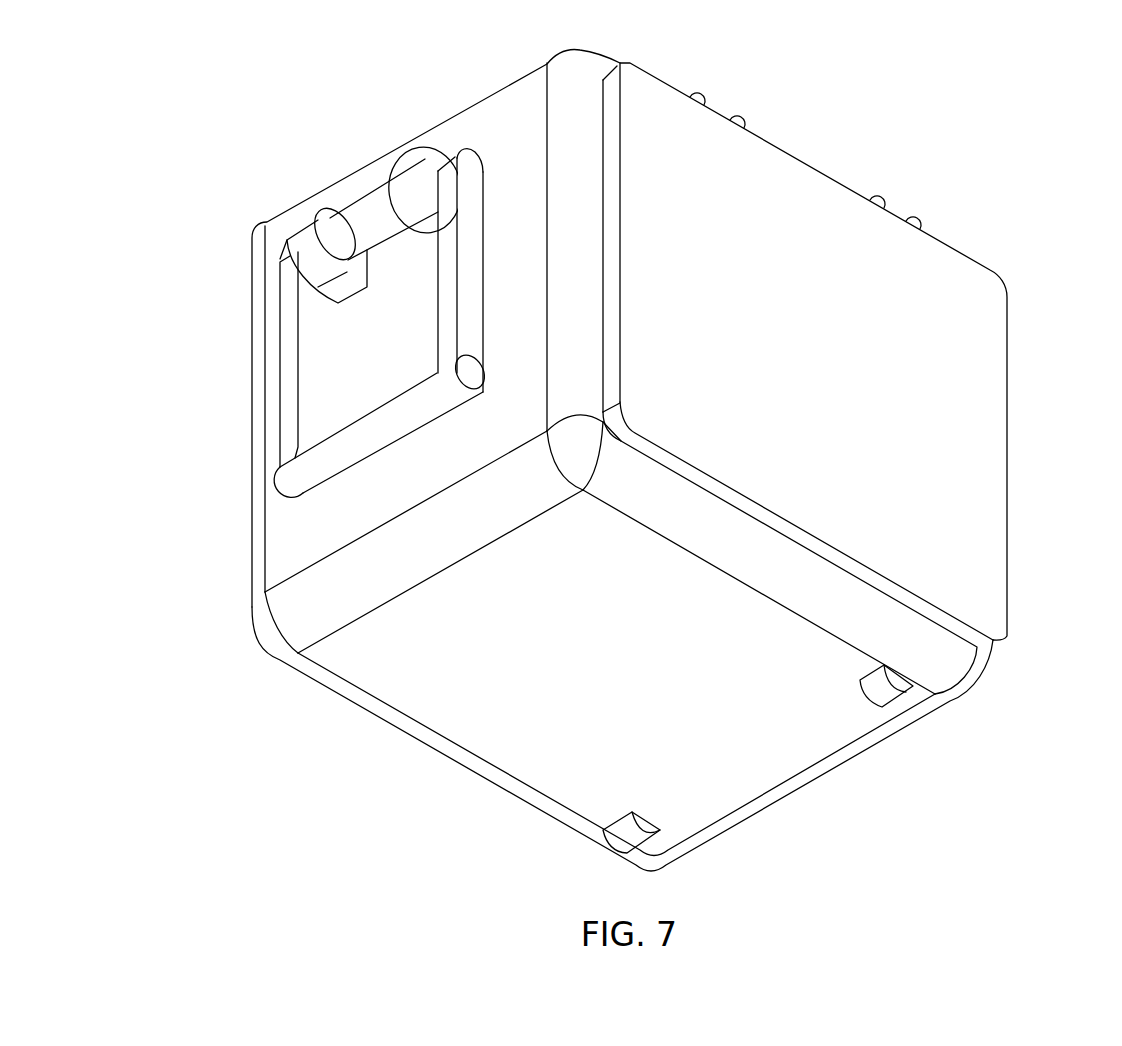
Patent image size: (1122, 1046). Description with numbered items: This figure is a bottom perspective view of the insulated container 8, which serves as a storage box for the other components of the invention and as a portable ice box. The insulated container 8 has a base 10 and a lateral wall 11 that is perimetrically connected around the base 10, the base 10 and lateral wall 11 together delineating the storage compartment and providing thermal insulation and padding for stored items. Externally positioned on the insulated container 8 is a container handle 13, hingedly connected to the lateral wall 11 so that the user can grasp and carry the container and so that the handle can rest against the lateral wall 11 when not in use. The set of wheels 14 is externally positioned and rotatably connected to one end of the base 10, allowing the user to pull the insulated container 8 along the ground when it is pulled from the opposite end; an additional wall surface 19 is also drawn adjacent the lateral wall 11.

The insulated container 8 is at (180, 512).
The base 10 is at (372, 704).
The lateral wall 11 is at (253, 341).
The container handle 13 is at (473, 307).
The set of wheels 14 is at (867, 690).
The right side wall 19 is at (1000, 488).